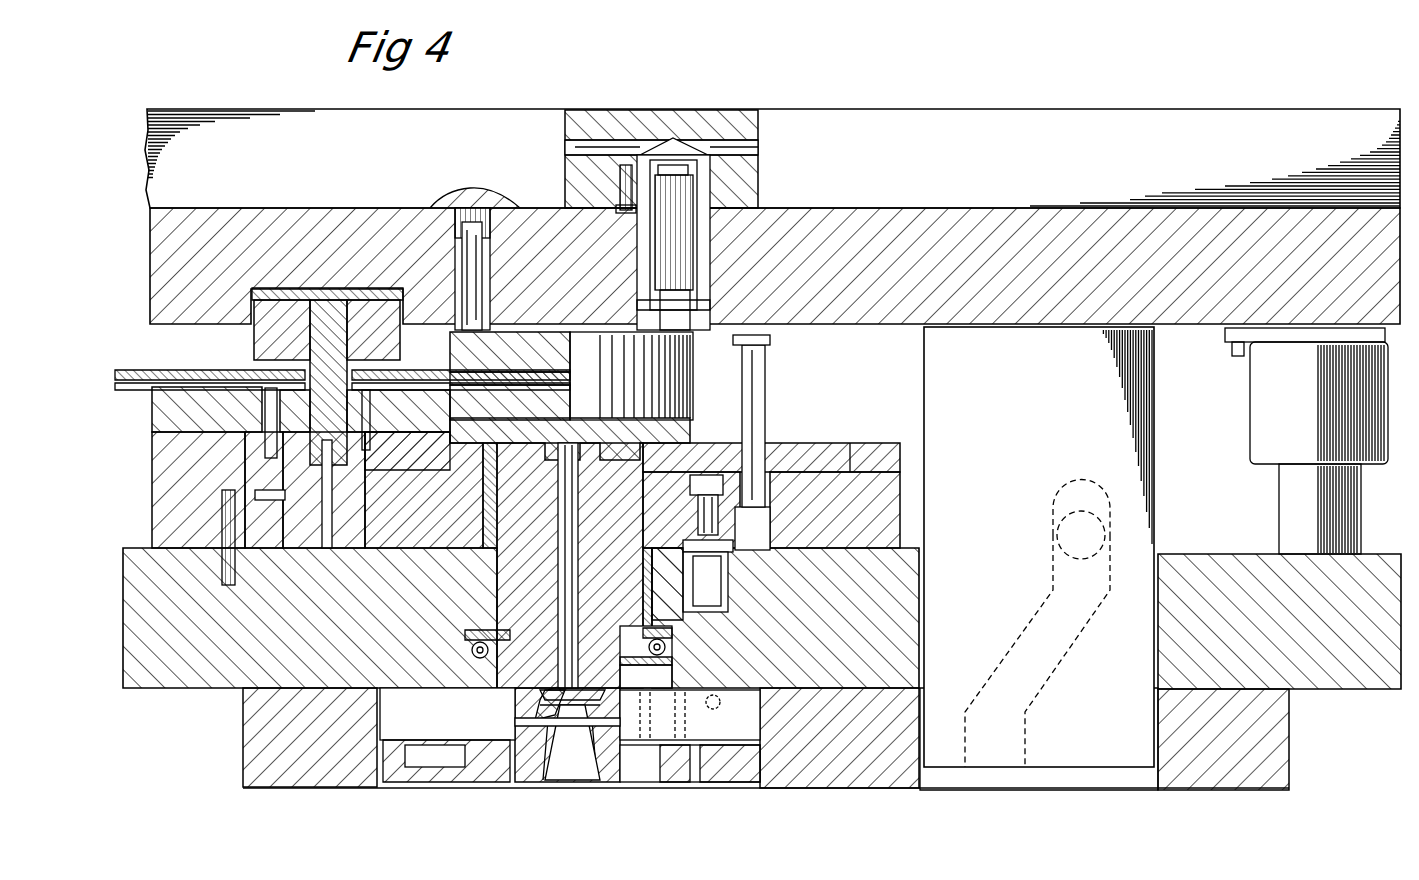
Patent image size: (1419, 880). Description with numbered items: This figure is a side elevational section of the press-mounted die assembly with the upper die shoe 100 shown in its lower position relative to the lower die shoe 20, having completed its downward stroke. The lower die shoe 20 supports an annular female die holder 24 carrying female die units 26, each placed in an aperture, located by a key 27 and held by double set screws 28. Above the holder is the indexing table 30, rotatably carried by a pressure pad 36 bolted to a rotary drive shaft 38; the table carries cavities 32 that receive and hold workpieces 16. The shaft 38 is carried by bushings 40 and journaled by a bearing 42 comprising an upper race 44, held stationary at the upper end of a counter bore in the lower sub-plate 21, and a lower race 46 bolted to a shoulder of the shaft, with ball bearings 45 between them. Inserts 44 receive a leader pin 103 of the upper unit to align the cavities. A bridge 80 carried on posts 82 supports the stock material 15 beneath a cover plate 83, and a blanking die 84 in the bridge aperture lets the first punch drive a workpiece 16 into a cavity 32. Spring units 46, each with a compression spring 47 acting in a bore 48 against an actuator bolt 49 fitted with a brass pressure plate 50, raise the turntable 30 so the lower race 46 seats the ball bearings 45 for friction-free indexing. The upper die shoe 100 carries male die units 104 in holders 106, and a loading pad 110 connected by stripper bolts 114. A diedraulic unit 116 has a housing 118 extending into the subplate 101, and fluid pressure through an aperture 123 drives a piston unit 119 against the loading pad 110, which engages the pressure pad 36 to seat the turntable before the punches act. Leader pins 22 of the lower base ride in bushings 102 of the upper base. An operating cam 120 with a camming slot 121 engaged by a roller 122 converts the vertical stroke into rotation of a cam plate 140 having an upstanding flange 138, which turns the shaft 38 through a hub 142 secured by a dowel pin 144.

The stock material 15 is at (555, 385).
The workpiece 16 is at (303, 475).
The lower die shoe 20 is at (857, 629).
The lower sub-plate 21 is at (670, 676).
The leader pin 22 is at (1279, 505).
The female die holder 24 is at (852, 445).
The female die unit 26 is at (327, 548).
The key 27 is at (368, 548).
The set screw 28 is at (252, 540).
The indexing table 30 is at (407, 459).
The cavity 32 is at (370, 470).
The pressure pad 36 is at (609, 443).
The rotary drive shaft 38 is at (515, 529).
The bushing 40 is at (648, 560).
The bearing 42 is at (688, 640).
The upper race 44 is at (775, 450).
The ball bearing 45 is at (665, 650).
The lower race 46 is at (740, 572).
The compression spring 47 is at (722, 596).
The bore 48 is at (695, 595).
The actuator bolt 49 is at (752, 528).
The brass pressure plate 50 is at (702, 472).
The bridge 80 is at (152, 410).
The post 82 is at (152, 471).
The cover plate 83 is at (190, 370).
The blanking die 84 is at (372, 415).
The upper die shoe 100 is at (982, 276).
The subplate 101 is at (960, 161).
The bushing 102 is at (1252, 410).
The leader pin 103 is at (767, 390).
The male die unit 104 is at (312, 409).
The holder 106 is at (258, 333).
The loading pad 110 is at (597, 363).
The stripper bolt 114 is at (466, 290).
The diedraulic unit 116 is at (722, 245).
The housing 118 is at (712, 278).
The piston unit 119 is at (660, 240).
The operating cam 120 is at (1025, 438).
The camming slot 121 is at (1078, 645).
The roller 122 is at (1052, 528).
The aperture 123 is at (725, 148).
The upstanding flange 138 is at (750, 770).
The cam plate 140 is at (680, 780).
The hub 142 is at (566, 775).
The dowel pin 144 is at (560, 748).